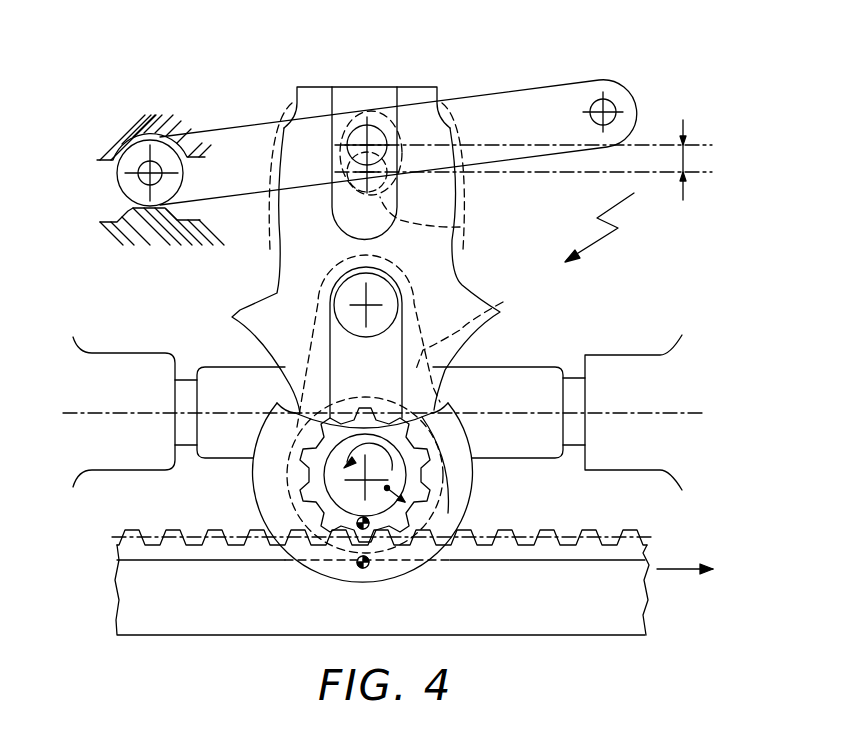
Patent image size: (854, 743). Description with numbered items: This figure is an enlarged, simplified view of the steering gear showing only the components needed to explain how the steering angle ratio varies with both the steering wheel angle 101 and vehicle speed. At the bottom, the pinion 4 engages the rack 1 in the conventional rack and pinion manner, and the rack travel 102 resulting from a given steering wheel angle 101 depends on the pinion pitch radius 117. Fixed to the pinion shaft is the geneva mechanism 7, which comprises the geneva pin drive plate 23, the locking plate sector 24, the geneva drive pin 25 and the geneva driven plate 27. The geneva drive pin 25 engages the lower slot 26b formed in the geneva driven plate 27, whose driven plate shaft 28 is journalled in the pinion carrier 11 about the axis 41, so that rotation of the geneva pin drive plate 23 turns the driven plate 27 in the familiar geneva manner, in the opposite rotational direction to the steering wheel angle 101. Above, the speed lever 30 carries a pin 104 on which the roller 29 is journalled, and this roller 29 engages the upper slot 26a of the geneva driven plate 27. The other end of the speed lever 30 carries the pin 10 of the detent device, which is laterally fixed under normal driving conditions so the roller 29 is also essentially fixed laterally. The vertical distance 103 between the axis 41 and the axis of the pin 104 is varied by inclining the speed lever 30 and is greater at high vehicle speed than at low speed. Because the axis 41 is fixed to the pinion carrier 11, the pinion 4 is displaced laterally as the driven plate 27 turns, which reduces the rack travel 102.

The rack 1 is at (613, 623).
The pinion 4 is at (460, 498).
The geneva mechanism 7 is at (609, 226).
The pin 10 is at (140, 177).
The pinion carrier 11 is at (222, 378).
The geneva pin drive plate 23 is at (503, 302).
The locking plate sector 24 is at (252, 470).
The geneva drive pin 25 is at (387, 322).
The upper slot 26a is at (340, 100).
The lower slot 26b is at (270, 293).
The geneva driven plate 27 is at (447, 208).
The driven plate shaft 28 is at (460, 227).
The roller 29 is at (413, 107).
The speed lever 30 is at (508, 100).
The axis 41 is at (360, 176).
The steering wheel angle 101 is at (380, 453).
The rack travel 102 is at (678, 568).
The vertical distance 103 is at (690, 157).
The pin 104 is at (367, 146).
The pinion pitch radius 117 is at (387, 488).